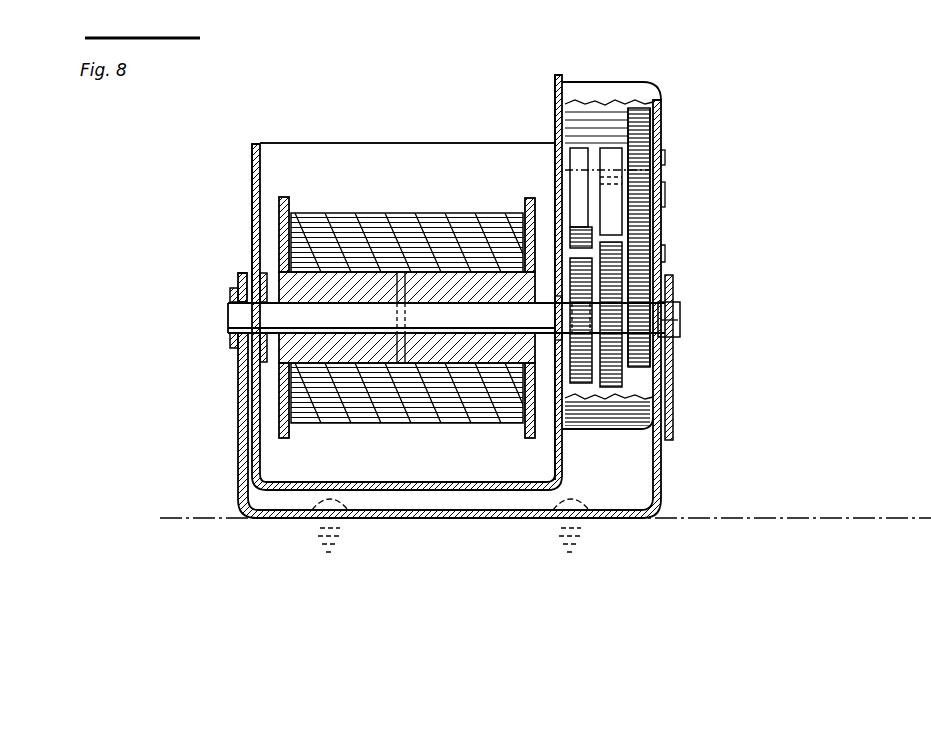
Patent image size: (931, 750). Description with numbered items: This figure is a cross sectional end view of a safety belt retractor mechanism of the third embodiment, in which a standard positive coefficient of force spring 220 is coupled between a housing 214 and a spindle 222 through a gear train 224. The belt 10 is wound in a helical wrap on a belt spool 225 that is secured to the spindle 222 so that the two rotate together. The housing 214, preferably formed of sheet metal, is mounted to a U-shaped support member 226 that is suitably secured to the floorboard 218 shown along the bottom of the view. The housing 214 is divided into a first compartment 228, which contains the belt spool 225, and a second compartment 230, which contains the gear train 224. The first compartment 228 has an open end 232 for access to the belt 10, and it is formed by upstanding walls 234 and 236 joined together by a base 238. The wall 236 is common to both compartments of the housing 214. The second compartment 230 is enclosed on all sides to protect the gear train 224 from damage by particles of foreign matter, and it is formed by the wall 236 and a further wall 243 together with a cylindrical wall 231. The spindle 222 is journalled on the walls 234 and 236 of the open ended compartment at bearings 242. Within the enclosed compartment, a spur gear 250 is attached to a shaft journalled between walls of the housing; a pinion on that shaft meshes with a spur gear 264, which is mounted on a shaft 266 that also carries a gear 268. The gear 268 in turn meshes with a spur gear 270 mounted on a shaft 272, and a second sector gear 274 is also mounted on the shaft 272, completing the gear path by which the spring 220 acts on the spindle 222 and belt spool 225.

The belt 10 is at (327, 215).
The housing 214 is at (238, 180).
The floorboard 218 is at (795, 515).
The positive coefficient of force spring 220 is at (657, 220).
The spindle 222 is at (236, 322).
The gear train 224 is at (597, 135).
The belt spool 225 is at (528, 200).
The U-shaped support member 226 is at (672, 467).
The first compartment 228 is at (415, 152).
The second compartment 230 is at (640, 95).
The cylindrical wall 231 is at (607, 425).
The open end 232 is at (342, 142).
The upstanding wall 234 is at (255, 237).
The upstanding wall 236 is at (557, 124).
The base 238 is at (300, 490).
The bearings 242 is at (230, 296).
The wall 243 is at (662, 256).
The spur gear 250 is at (577, 377).
The spur gear 264 is at (620, 383).
The shaft 266 is at (665, 320).
The gear 268 is at (650, 345).
The spur gear 270 is at (643, 150).
The shaft 272 is at (663, 192).
The second sector gear 274 is at (588, 245).